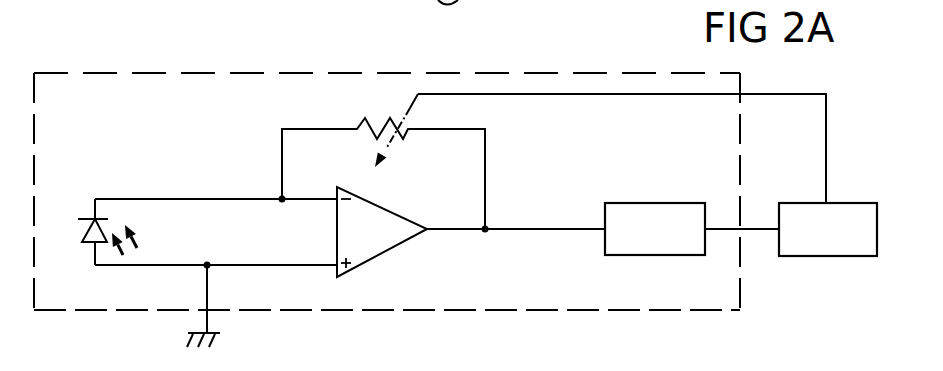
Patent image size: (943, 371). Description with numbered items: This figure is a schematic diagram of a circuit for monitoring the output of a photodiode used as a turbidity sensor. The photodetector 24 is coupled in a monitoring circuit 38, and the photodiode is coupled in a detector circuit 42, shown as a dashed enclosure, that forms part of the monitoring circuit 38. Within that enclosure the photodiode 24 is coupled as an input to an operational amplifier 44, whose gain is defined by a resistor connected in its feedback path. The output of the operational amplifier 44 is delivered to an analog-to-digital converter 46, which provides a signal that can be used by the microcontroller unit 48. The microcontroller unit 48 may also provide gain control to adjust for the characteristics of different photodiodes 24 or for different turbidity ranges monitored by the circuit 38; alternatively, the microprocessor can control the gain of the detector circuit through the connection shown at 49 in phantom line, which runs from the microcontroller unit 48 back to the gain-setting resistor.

The photodetector 24 is at (70, 212).
The monitoring circuit 38 is at (333, 55).
The detector circuit 42 is at (655, 73).
The operational amplifier 44 is at (368, 262).
The analog-to-digital converter 46 is at (670, 203).
The microcontroller unit 48 is at (800, 203).
The detector circuit gain control 49 is at (600, 94).